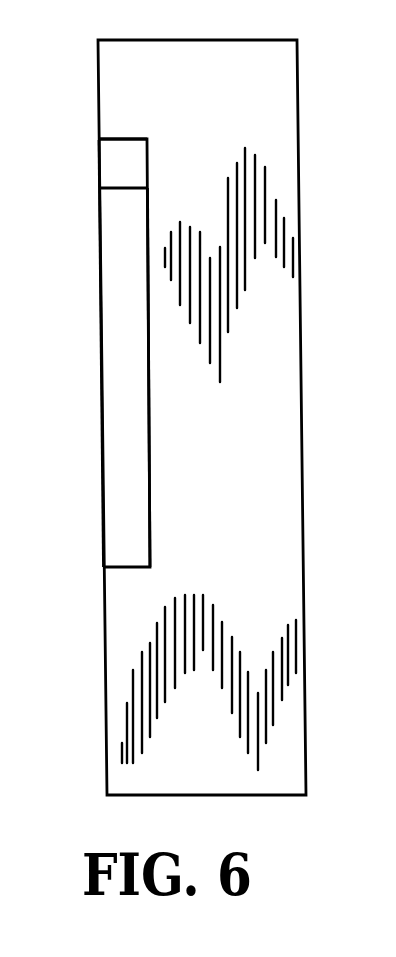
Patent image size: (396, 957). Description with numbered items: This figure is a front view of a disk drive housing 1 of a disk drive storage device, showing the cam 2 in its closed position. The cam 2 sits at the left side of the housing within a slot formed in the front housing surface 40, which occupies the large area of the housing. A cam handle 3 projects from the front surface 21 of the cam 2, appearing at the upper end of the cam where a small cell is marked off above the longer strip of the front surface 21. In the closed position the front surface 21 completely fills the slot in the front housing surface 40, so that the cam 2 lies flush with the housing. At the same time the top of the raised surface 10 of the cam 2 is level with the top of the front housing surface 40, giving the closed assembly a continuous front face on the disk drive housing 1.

The disk drive housing 1 is at (344, 90).
The cam 2 is at (80, 437).
The cam handle 3 is at (120, 163).
The raised surface 10 is at (100, 338).
The front surface 21 is at (132, 247).
The front housing surface 40 is at (252, 106).